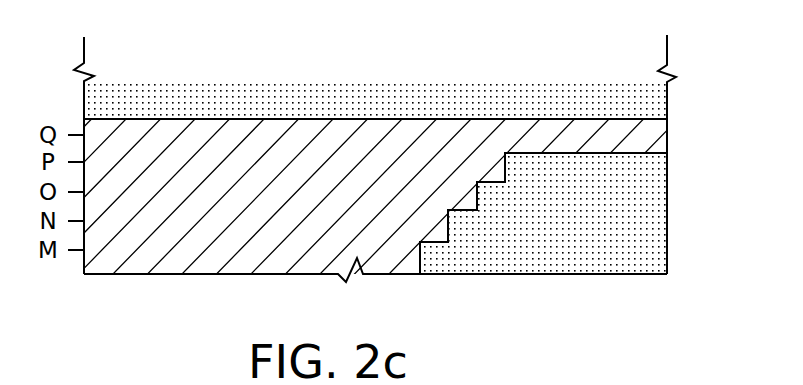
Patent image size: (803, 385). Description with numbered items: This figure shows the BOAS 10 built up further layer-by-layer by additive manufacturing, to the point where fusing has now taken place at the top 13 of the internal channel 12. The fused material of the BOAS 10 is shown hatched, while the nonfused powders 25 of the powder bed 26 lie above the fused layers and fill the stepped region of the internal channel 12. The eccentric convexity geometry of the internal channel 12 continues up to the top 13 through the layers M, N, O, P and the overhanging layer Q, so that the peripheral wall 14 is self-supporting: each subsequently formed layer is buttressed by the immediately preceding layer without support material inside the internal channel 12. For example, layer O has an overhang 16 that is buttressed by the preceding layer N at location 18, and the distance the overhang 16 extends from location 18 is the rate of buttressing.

The BOAS 10 is at (187, 277).
The internal channel 12 is at (637, 230).
The top of internal channel 13 is at (628, 170).
The peripheral wall 14 is at (485, 198).
The overhang 16 is at (468, 190).
The location 18 is at (440, 230).
The nonfused powders 25 is at (428, 141).
The powder bed 26 is at (278, 82).